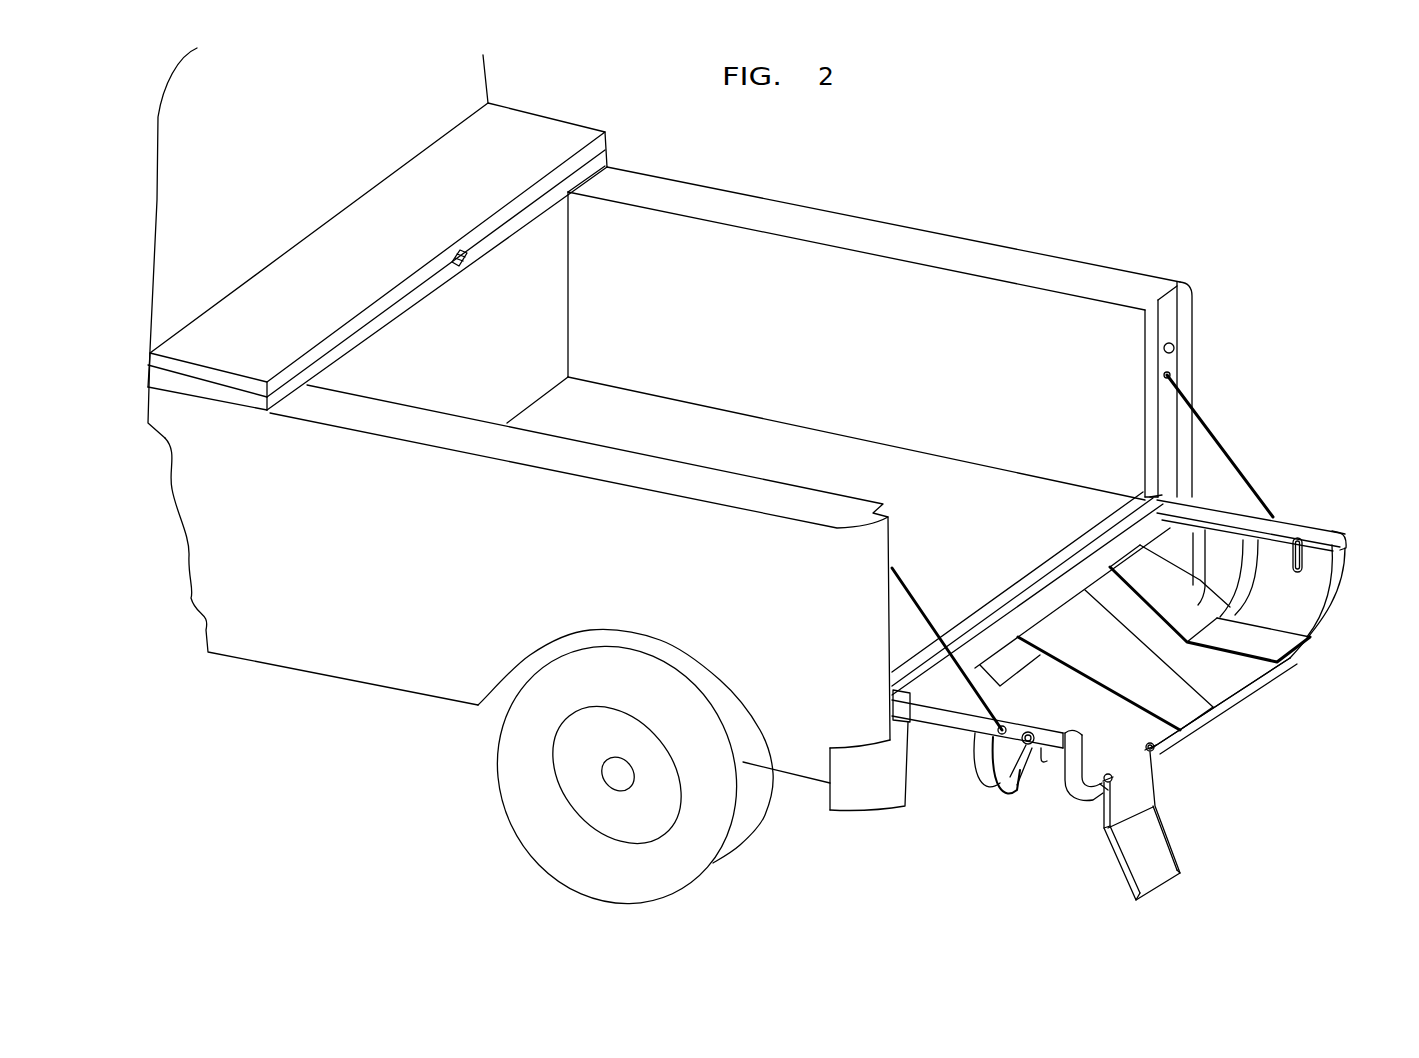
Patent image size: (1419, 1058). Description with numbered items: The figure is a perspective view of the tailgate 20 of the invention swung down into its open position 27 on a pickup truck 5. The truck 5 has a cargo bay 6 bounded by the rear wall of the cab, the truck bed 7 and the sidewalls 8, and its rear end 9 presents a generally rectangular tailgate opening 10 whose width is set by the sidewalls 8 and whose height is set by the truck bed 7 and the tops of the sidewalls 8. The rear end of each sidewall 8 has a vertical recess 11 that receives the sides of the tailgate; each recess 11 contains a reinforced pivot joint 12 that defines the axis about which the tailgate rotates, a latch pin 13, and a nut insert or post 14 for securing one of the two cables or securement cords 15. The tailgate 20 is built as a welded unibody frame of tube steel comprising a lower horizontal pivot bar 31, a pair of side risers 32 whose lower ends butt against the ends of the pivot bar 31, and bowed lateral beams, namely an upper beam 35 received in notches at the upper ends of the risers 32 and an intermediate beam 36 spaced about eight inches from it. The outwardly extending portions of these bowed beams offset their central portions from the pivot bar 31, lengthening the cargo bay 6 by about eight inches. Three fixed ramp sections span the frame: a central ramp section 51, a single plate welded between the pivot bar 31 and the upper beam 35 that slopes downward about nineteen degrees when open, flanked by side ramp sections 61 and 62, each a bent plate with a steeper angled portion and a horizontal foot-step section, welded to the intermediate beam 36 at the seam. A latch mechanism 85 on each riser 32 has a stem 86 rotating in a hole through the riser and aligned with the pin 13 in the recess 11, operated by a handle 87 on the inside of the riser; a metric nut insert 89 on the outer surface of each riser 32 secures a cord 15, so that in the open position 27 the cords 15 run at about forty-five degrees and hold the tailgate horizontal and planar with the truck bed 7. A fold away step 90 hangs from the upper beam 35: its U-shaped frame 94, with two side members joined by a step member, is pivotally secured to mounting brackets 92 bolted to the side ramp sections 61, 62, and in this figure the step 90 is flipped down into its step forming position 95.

The pickup truck 5 is at (258, 668).
The cargo bay 6 is at (723, 298).
The truck bed 7 is at (969, 507).
The sidewalls 8 is at (1091, 389).
The rear end 9 is at (876, 591).
The tailgate opening 10 is at (1122, 382).
The vertical recess 11 is at (1170, 320).
The pivot joint 12 is at (1157, 498).
The latch pin 13 is at (1176, 352).
The nut insert or post 14 is at (1172, 378).
The cables or securement cords 15 is at (1233, 465).
The tailgate 20 is at (1263, 690).
The open position 27 is at (1300, 660).
The pivot bar 31 is at (1063, 580).
The side risers 32 is at (1283, 535).
The upper beam 35 is at (1333, 604).
The intermediate beam 36 is at (1245, 586).
The central ramp section 51 is at (1132, 669).
The side ramp section 61 is at (1183, 611).
The side ramp section 62 is at (1157, 750).
The latch mechanism 85 is at (1313, 525).
The stem 86 is at (1013, 777).
The handle 87 is at (1045, 760).
The nut insert 89 is at (982, 753).
The fold away step 90 is at (1160, 815).
The mounting brackets 92 is at (1102, 786).
The U-shaped frame 94 is at (1127, 873).
The step forming position 95 is at (1188, 857).